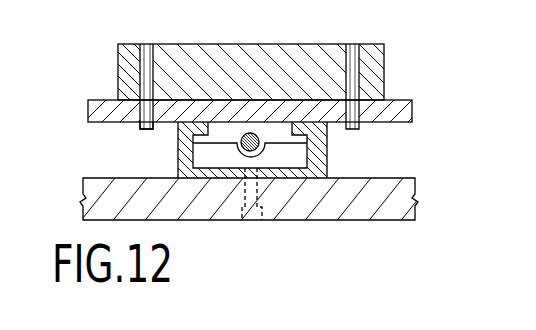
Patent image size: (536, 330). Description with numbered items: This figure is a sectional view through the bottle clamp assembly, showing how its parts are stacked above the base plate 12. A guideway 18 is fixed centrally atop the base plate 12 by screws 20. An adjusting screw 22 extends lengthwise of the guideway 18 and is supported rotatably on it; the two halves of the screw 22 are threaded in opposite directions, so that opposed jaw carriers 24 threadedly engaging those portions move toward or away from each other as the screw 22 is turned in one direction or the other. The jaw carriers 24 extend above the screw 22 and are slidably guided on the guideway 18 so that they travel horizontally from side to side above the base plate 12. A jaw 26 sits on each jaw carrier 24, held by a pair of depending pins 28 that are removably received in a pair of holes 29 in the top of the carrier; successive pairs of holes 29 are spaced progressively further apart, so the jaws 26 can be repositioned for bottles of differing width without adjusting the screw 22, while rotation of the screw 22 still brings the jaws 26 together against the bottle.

The base plate 12 is at (373, 208).
The guideway 18 is at (320, 163).
The screws 20 is at (262, 222).
The adjusting screw 22 is at (262, 141).
The jaw carriers 24 is at (403, 108).
The jaws 26 is at (377, 64).
The depending pins 28 is at (141, 124).
The holes 29 is at (141, 103).